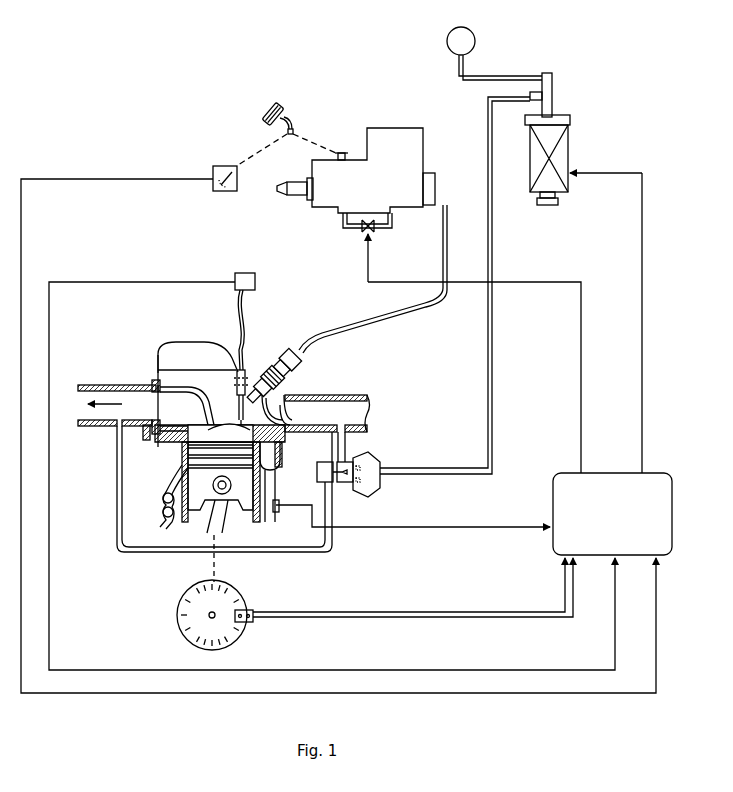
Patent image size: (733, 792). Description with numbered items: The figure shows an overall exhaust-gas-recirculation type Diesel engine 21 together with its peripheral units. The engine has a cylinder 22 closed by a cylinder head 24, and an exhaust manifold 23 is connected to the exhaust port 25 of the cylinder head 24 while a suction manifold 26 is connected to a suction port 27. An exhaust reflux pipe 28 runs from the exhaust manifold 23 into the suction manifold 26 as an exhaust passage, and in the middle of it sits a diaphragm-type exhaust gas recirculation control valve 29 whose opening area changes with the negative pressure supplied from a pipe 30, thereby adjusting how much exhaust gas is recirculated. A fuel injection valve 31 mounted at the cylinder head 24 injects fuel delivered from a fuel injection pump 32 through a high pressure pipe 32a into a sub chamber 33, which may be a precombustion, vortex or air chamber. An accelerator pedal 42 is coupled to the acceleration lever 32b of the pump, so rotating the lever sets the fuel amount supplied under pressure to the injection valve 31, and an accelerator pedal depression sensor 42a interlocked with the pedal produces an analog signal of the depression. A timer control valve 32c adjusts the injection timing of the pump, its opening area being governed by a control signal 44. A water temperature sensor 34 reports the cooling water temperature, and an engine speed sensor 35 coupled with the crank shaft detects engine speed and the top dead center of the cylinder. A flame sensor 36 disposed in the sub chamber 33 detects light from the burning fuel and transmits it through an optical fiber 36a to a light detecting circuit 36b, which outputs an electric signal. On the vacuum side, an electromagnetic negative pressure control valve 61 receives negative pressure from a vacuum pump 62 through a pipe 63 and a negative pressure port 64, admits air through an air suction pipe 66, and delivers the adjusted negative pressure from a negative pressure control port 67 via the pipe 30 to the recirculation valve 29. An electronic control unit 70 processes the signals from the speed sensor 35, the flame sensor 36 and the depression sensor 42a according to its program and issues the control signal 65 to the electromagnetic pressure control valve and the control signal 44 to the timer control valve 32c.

The Diesel engine 21 is at (194, 338).
The cylinder 22 is at (272, 490).
The exhaust manifold 23 is at (117, 428).
The cylinder head 24 is at (153, 380).
The exhaust port 25 is at (143, 445).
The suction manifold 26 is at (321, 396).
The suction port 27 is at (283, 425).
The exhaust reflux pipe 28 is at (117, 507).
The exhaust gas recirculation control valve 29 is at (345, 487).
The pipe 30 is at (428, 478).
The fuel injection valve 31 is at (276, 392).
The fuel injection pump 32 is at (392, 121).
The high pressure pipe 32a is at (373, 283).
The acceleration lever 32b is at (348, 152).
The timer control valve 32c is at (362, 237).
The sub chamber 33 is at (280, 452).
The water temperature sensor 34 is at (279, 510).
The engine speed sensor 35 is at (247, 591).
The flame sensor 36 is at (248, 368).
The optical fiber 36a is at (248, 320).
The light detecting circuit 36b is at (255, 278).
The accelerator pedal 42 is at (285, 106).
The accelerator pedal depression sensor 42a is at (237, 191).
The control signal 44 is at (401, 282).
The electromagnetic negative pressure control valve 61 is at (578, 153).
The vacuum pump 62 is at (475, 36).
The pipe 63 is at (501, 76).
The negative pressure port 64 is at (549, 73).
The control signal 65 is at (642, 173).
The air suction pipe 66 is at (547, 205).
The negative pressure control port 67 is at (530, 98).
The electronic control unit 70 is at (661, 473).